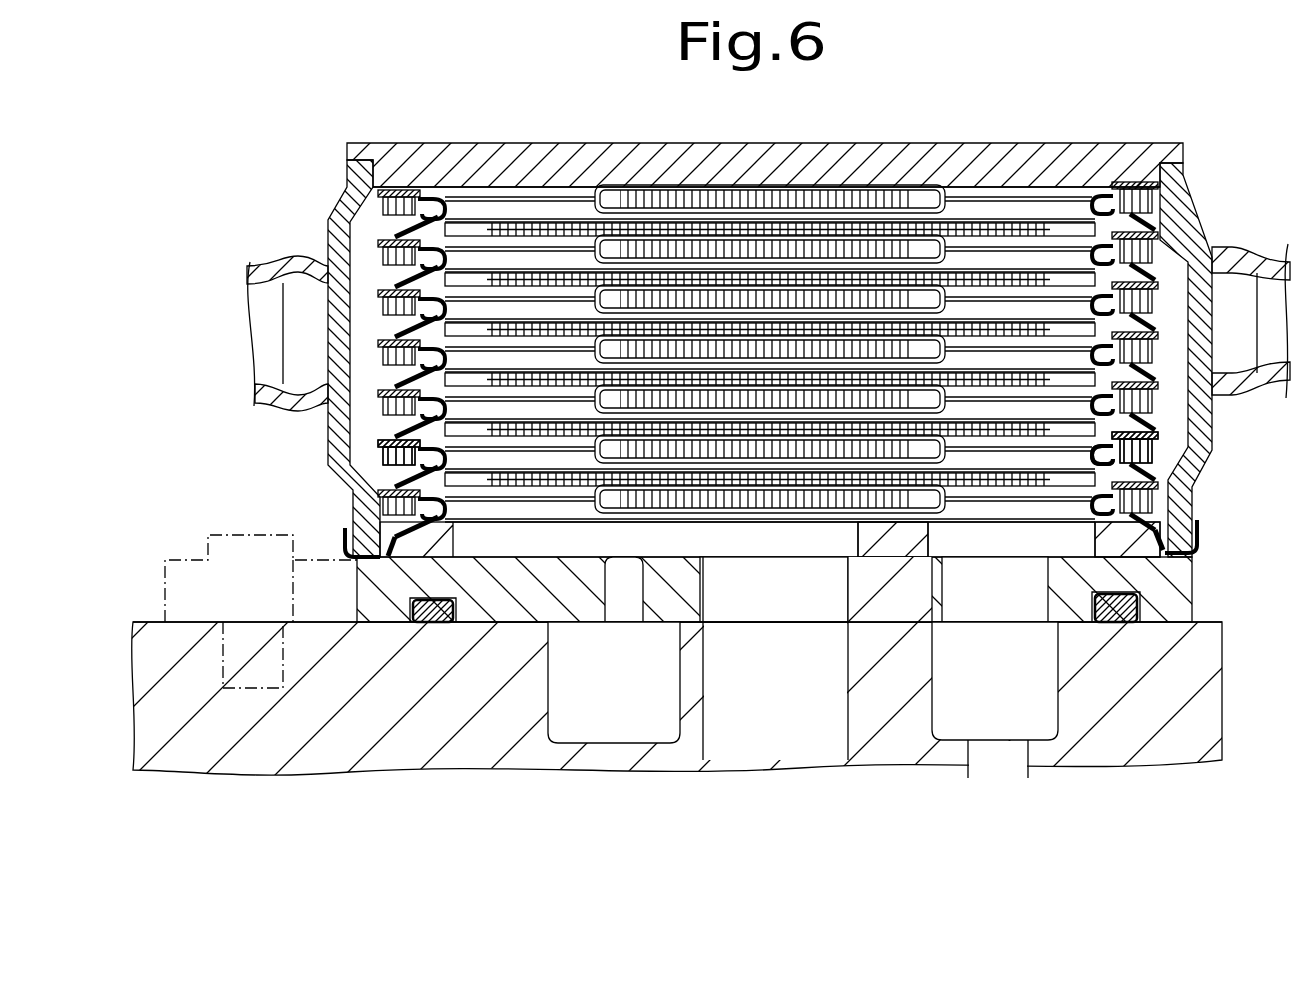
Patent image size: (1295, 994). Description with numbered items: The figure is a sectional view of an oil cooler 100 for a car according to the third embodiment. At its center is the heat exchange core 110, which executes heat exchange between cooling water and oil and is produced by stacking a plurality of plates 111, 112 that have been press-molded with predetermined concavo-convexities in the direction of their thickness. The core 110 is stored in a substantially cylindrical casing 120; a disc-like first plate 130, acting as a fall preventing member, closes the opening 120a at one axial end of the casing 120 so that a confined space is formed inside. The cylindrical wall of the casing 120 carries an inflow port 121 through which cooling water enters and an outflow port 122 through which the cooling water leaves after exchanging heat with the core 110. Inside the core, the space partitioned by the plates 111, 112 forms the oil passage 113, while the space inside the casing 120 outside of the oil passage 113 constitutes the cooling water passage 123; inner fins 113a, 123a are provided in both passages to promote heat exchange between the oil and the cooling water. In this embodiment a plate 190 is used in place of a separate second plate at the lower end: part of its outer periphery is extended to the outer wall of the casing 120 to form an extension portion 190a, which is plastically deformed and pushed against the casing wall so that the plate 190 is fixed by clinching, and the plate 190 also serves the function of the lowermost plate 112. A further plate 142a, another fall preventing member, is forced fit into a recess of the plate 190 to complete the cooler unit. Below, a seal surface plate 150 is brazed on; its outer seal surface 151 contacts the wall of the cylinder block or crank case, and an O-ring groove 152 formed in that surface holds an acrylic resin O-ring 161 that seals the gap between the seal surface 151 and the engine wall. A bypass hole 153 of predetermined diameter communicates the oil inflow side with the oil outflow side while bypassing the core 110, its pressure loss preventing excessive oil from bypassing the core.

The oil cooler 100 is at (327, 172).
The heat exchange core 110 is at (483, 263).
The inner fin 123a is at (608, 208).
The inner fin 113a is at (780, 225).
The oil passage 113 is at (888, 190).
The opening 120a is at (975, 187).
The first plate 130 is at (1098, 152).
The plate 111 is at (1163, 183).
The plate 112 is at (1120, 212).
The casing 120 is at (1213, 225).
The inflow port 121 is at (262, 305).
The outflow port 122 is at (1240, 372).
The cooling water passage 123 is at (377, 465).
The plate 142a is at (393, 535).
The extension portion 190a is at (1195, 548).
The plate 190 is at (1190, 580).
The seal surface plate 150 is at (1178, 589).
The seal surface 151 is at (1073, 622).
The O-ring groove 152 is at (473, 612).
The O-ring 161 is at (430, 624).
The bypass hole 153 is at (610, 583).